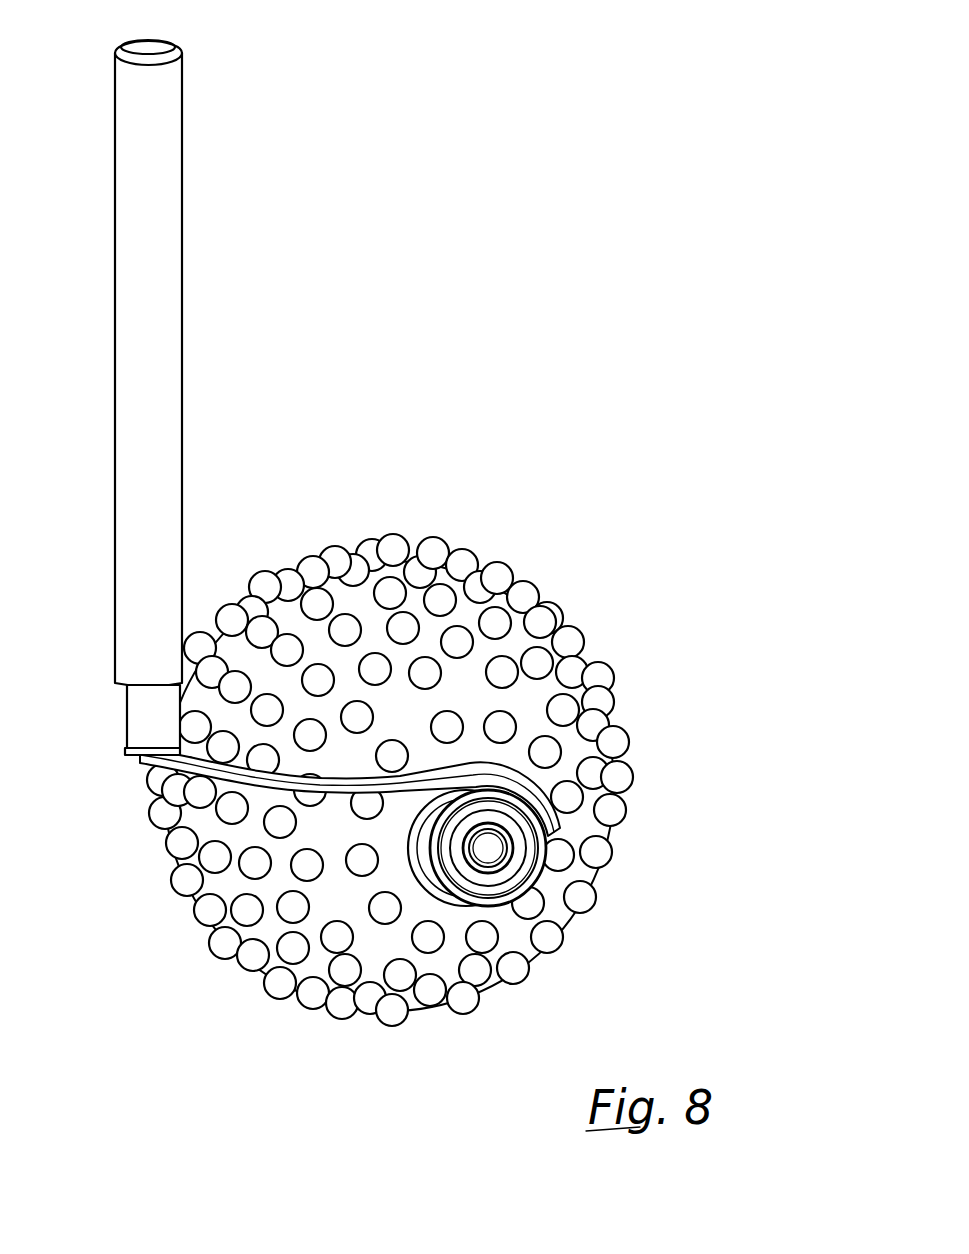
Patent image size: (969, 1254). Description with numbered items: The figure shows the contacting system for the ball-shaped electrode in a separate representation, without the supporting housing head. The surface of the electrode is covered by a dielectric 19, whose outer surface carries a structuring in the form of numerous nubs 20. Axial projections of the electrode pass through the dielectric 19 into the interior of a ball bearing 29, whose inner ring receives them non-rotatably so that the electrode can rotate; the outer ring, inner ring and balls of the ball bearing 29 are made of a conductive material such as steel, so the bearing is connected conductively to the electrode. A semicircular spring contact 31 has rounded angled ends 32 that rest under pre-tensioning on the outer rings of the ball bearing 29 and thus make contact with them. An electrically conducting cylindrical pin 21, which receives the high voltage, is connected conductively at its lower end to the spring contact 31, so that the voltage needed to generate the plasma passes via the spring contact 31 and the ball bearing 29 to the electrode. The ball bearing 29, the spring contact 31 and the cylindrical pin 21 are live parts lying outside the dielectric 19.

The dielectric 19 is at (507, 603).
The nubs 20 is at (570, 637).
The electrically conducting cylindrical pin 21 is at (173, 352).
The ball bearing 29 is at (528, 866).
The spring contact 31 is at (227, 775).
The rounded angled ends 32 is at (557, 825).